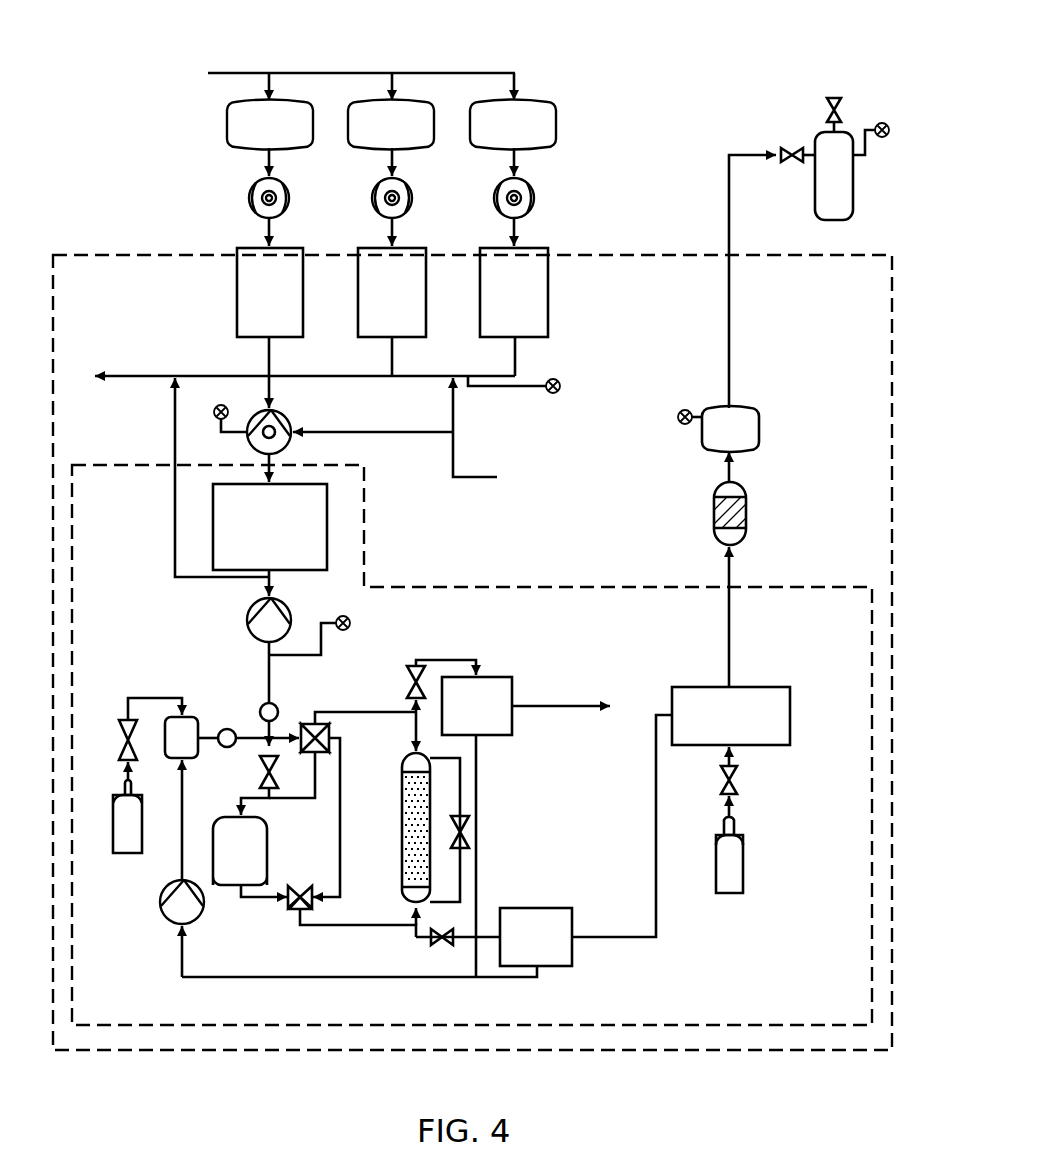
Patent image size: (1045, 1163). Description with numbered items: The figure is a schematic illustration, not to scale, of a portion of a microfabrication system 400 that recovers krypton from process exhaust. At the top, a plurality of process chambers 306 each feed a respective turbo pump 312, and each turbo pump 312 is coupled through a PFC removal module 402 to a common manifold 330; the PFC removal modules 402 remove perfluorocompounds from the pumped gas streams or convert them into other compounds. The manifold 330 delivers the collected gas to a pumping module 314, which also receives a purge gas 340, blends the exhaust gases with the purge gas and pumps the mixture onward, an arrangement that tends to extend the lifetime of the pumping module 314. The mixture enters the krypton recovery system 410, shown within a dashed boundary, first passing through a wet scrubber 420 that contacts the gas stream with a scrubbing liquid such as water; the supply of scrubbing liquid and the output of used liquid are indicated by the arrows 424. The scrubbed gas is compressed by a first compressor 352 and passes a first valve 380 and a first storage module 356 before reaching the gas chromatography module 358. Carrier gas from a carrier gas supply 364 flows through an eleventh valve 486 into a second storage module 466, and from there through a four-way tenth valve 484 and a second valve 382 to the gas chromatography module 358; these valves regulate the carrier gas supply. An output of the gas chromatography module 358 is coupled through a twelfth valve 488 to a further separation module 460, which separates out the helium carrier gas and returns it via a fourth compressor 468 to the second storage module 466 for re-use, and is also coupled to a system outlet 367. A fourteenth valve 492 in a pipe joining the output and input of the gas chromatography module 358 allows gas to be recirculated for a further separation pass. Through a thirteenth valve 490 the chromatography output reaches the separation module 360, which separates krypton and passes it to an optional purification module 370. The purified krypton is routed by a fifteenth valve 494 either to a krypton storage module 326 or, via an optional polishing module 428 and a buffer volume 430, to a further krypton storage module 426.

The microfabrication system 400 is at (724, 88).
The process chambers 306 is at (230, 147).
The turbo pumps 312 is at (250, 204).
The PFC removal modules 402 is at (237, 307).
The manifold 330 is at (375, 378).
The purge gas flow 340 is at (453, 458).
The scrubbing liquid supply and output 424 is at (175, 431).
The pumping module 314 is at (291, 421).
The scrubber 420 is at (327, 530).
The krypton recovery system 410 is at (408, 586).
The first compressor 352 is at (288, 607).
The first valve 380 is at (259, 768).
The first storage module 356 is at (267, 840).
The second valve 382 is at (292, 910).
The tenth valve 484 is at (313, 723).
The second storage module 466 is at (198, 716).
The eleventh valve 486 is at (124, 730).
The carrier gas supply 364 is at (134, 855).
The fourth compressor 468 is at (170, 920).
The twelfth valve 488 is at (408, 672).
The gas chromatography module 358 is at (402, 805).
The fourteenth valve 492 is at (470, 840).
The further separation module 460 is at (505, 677).
The system outlet 367 is at (597, 705).
The thirteenth valve 490 is at (450, 945).
The separation module 360 is at (572, 960).
The purification module 370 is at (790, 705).
The fifteenth valve 494 is at (740, 788).
The krypton storage module 326 is at (745, 877).
The polishing module 428 is at (714, 505).
The buffer volume 430 is at (759, 440).
The further krypton storage module 426 is at (843, 130).